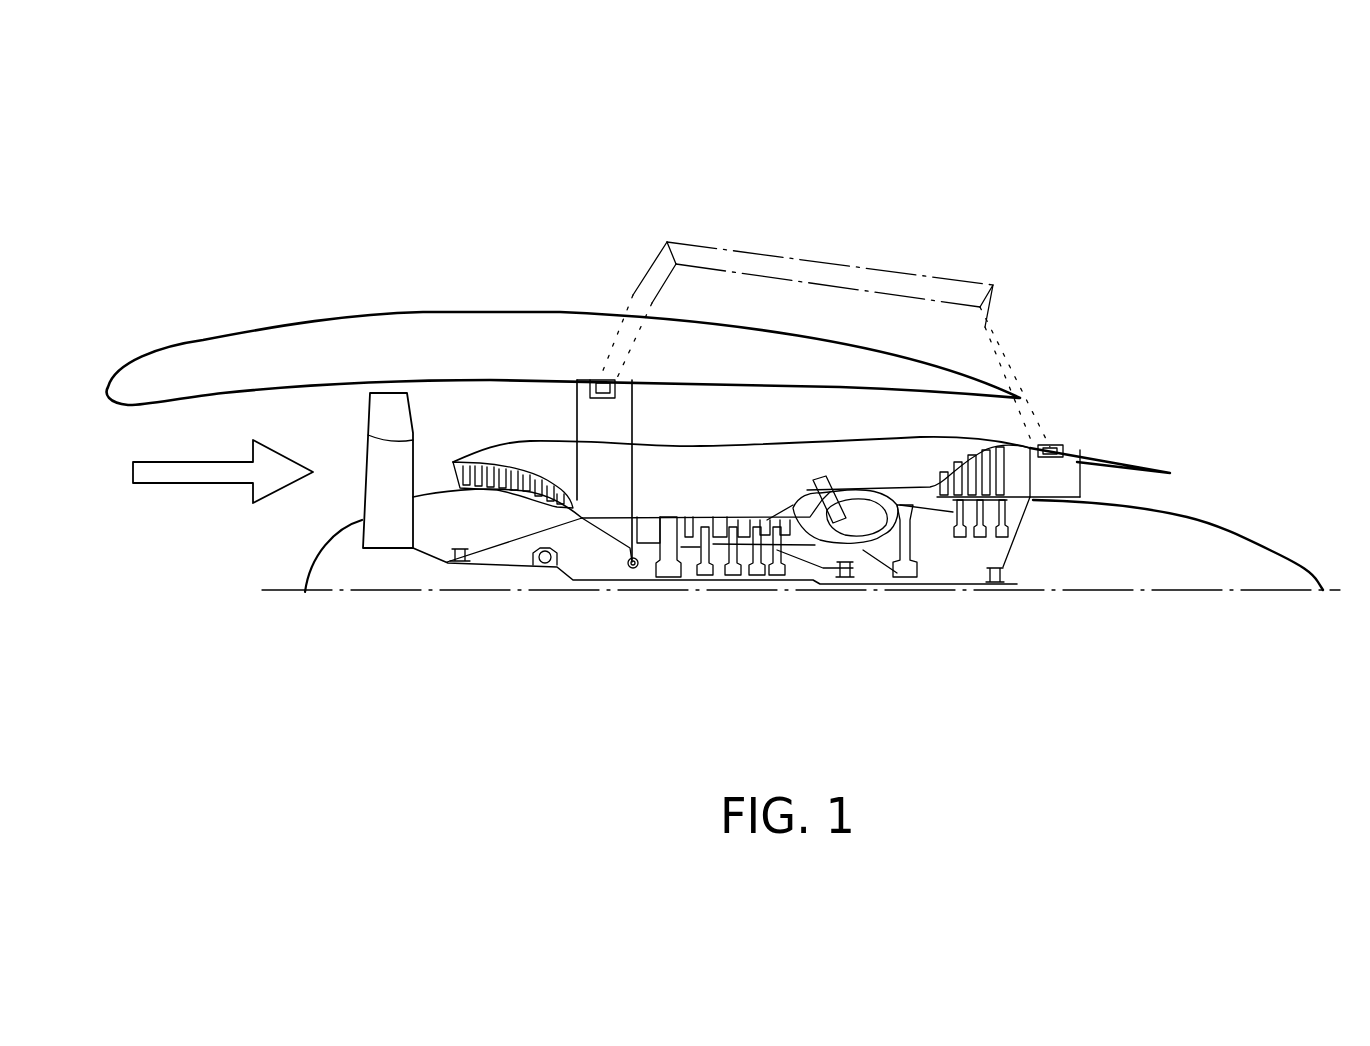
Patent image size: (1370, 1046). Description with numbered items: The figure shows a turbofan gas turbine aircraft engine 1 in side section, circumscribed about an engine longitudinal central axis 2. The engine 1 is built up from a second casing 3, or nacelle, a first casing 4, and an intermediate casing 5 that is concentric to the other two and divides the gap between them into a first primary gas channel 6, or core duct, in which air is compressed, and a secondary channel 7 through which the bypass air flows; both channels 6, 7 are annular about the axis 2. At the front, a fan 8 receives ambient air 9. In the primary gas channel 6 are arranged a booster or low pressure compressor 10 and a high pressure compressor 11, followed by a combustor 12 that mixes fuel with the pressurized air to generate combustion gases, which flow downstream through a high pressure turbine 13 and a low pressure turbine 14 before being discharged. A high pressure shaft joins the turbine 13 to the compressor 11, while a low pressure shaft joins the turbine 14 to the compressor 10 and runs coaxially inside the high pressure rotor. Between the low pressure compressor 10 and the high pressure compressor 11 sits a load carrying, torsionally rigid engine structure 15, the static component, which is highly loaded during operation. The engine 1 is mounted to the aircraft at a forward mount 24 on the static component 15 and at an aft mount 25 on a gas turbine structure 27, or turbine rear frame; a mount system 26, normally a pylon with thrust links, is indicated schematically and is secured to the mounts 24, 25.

The turbofan gas turbine aircraft engine 1 is at (1174, 191).
The engine longitudinal central axis 2 is at (280, 592).
The second casing 3 is at (212, 360).
The first casing 4 is at (580, 558).
The intermediate casing 5 is at (543, 457).
The first primary gas channel 6 is at (433, 465).
The secondary channel 7 is at (516, 413).
The fan 8 is at (385, 400).
The ambient air 9 is at (177, 477).
The low pressure compressor 10 is at (461, 518).
The high pressure compressor 11 is at (746, 618).
The combustor 12 is at (872, 520).
The high pressure turbine 13 is at (930, 621).
The low pressure turbine 14 is at (1012, 554).
The load carrying, torsionally rigid engine structure 15 is at (602, 346).
The forward mount 24 is at (587, 388).
The aft mount 25 is at (1063, 447).
The mount system 26 is at (800, 268).
The gas turbine structure 27 is at (1062, 478).